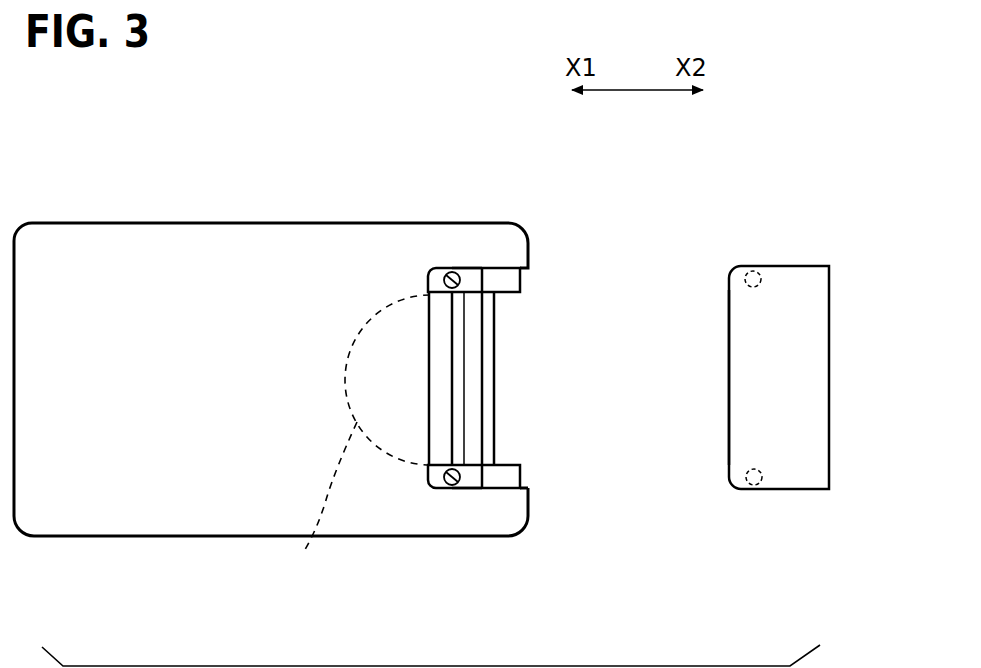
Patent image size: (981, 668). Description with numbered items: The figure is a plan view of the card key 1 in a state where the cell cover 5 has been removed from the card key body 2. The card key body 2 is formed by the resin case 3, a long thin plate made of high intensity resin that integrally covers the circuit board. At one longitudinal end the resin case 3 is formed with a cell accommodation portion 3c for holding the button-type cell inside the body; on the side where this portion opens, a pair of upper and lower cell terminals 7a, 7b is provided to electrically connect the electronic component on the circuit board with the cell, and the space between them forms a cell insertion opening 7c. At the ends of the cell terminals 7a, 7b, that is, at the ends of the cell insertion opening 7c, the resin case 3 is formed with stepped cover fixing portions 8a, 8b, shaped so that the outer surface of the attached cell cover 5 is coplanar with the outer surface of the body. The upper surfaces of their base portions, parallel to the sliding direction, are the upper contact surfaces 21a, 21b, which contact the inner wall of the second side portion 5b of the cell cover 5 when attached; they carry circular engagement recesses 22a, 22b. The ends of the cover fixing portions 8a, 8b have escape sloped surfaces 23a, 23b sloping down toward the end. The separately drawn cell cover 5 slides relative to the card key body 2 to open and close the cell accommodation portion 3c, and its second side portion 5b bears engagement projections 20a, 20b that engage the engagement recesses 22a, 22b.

The card key 1 is at (592, 200).
The card key body 2 is at (291, 216).
The resin case 3 is at (185, 523).
The cell accommodation portion 3c is at (356, 439).
The cell cover 5 is at (818, 320).
The second side portion 5b is at (742, 372).
The cell terminal 7a is at (458, 358).
The cell terminal 7b is at (490, 420).
The cell insertion opening 7c is at (465, 375).
The cover fixing portion 8a is at (473, 265).
The cover fixing portion 8b is at (478, 491).
The engagement projection 20a is at (748, 272).
The engagement projection 20b is at (745, 483).
The upper contact surface 21a is at (436, 272).
The upper contact surface 21b is at (435, 487).
The engagement recess 22a is at (448, 272).
The engagement recess 22b is at (450, 487).
The escape sloped surface 23a is at (510, 282).
The escape sloped surface 23b is at (510, 478).